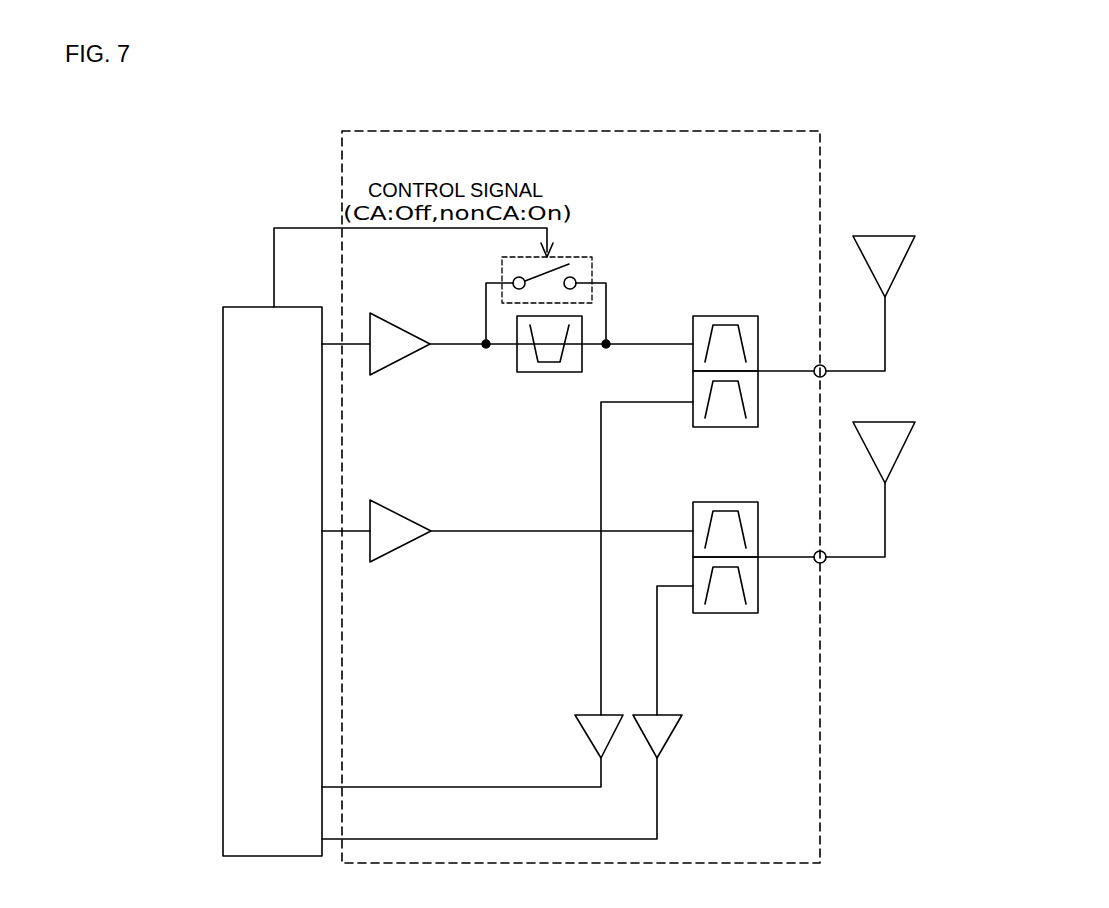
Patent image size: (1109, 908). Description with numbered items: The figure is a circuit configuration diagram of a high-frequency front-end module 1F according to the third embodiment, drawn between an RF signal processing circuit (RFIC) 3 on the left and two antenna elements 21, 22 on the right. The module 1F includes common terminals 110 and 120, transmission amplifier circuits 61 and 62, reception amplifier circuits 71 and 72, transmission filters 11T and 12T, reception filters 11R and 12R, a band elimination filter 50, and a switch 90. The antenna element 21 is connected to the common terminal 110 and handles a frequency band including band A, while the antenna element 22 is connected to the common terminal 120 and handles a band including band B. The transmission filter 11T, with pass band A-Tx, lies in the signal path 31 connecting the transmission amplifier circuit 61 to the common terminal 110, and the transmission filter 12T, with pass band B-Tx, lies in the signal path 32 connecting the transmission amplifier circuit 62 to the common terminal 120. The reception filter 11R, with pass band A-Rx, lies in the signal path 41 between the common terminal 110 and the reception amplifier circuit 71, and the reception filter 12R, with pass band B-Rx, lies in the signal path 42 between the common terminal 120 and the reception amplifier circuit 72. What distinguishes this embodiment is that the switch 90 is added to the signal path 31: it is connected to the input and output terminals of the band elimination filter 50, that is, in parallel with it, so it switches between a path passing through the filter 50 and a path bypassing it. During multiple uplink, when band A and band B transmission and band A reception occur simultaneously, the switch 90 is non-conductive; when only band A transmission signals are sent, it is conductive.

The high-frequency front-end module 1F is at (778, 131).
The RF signal processing circuit (RFIC) 3 is at (258, 307).
The transmission amplifier circuit 61 is at (390, 318).
The transmission amplifier circuit 62 is at (390, 506).
The signal path 31 is at (632, 344).
The signal path 32 is at (492, 531).
The band elimination filter 50 is at (530, 372).
The switch 90 is at (565, 257).
The transmission filter 11T is at (758, 330).
The reception filter 11R is at (758, 410).
The transmission filter 12T is at (758, 520).
The reception filter 12R is at (758, 595).
The common terminal 110 is at (826, 376).
The common terminal 120 is at (826, 562).
The antenna element 21 is at (882, 236).
The antenna element 22 is at (882, 422).
The signal path 41 is at (600, 640).
The signal path 42 is at (656, 640).
The reception amplifier circuit 71 is at (582, 715).
The reception amplifier circuit 72 is at (676, 715).